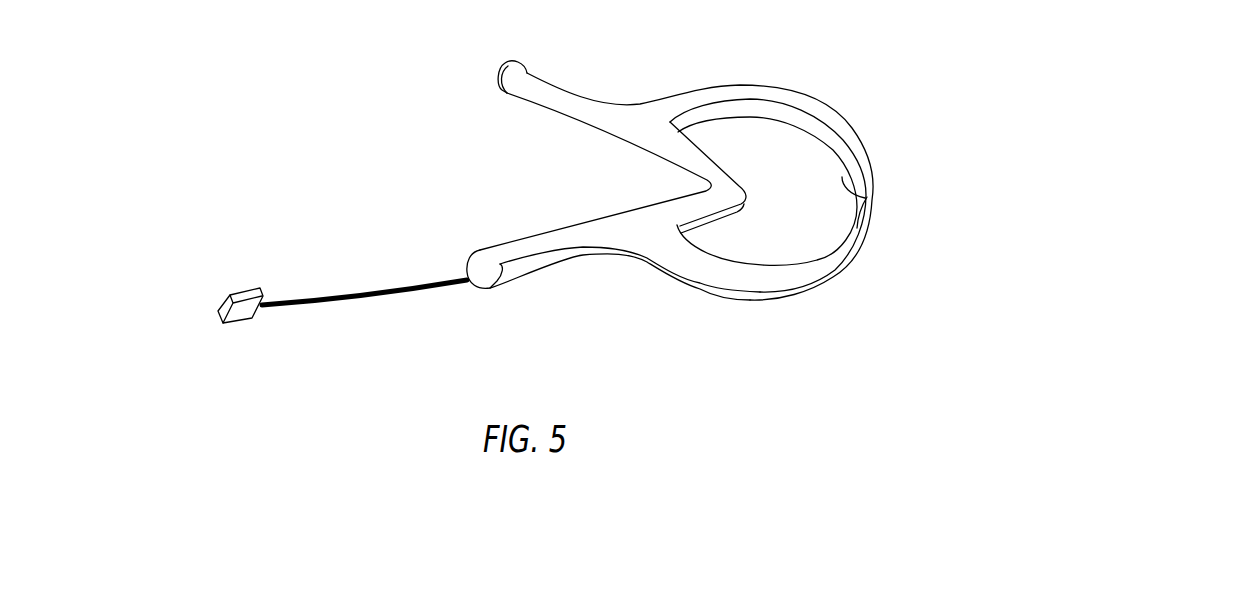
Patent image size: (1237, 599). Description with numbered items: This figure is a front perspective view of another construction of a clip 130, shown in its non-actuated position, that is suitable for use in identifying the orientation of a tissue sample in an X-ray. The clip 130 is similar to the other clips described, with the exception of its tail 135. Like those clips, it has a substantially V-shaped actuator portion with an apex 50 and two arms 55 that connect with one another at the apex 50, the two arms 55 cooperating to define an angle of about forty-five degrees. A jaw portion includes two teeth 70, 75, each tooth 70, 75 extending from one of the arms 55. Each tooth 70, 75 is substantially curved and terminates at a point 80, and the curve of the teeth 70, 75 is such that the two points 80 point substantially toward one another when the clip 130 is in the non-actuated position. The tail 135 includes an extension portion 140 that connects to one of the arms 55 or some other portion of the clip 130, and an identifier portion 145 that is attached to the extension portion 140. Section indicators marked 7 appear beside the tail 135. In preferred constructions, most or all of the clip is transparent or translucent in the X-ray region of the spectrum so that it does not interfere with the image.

The section line 7- 7 is at (200, 318).
The apex 50 is at (733, 180).
The arms 55 is at (558, 95).
The tooth 70 is at (805, 93).
The tooth 75 is at (767, 280).
The point 80 is at (842, 177).
The clip 130 is at (930, 105).
The tail 135 is at (303, 360).
The extension portion 140 is at (363, 292).
The identifier portion 145 is at (236, 293).